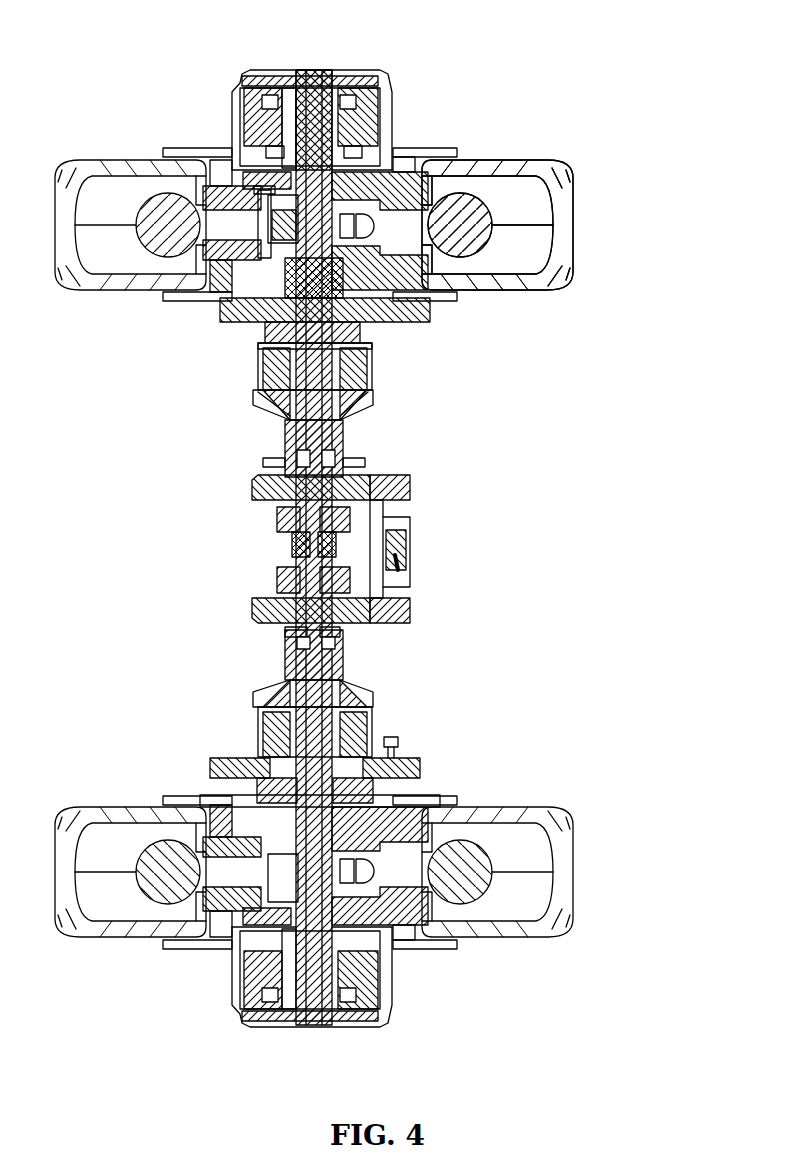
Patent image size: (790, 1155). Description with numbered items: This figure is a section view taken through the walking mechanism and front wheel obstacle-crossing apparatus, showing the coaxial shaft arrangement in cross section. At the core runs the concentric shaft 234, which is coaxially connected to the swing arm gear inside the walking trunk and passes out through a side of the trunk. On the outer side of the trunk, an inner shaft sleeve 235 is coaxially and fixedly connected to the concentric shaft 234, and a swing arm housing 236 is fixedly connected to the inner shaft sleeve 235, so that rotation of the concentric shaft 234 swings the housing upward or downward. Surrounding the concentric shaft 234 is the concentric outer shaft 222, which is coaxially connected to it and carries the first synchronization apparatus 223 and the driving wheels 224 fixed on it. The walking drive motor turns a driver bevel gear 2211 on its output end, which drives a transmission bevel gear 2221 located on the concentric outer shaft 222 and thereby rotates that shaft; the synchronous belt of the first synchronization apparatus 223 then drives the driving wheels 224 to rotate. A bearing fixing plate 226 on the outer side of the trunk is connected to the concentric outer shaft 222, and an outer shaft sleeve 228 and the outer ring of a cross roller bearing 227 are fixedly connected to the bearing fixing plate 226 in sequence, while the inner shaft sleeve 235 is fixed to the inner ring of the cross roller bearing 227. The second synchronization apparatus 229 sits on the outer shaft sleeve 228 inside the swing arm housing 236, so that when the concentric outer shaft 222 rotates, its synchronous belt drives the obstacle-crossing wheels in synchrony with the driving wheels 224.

The concentric shaft 234 is at (306, 165).
The inner shaft sleeve 235 is at (326, 100).
The swing arm housing 236 is at (373, 82).
The second synchronization apparatus 229 is at (362, 127).
The outer shaft sleeve 228 is at (263, 167).
The driving wheels 224 is at (572, 205).
The cross roller bearing 227 is at (262, 180).
The bearing fixing plate 226 is at (258, 200).
The first synchronization apparatus 223 is at (363, 332).
The transmission bevel gear 2221 is at (357, 363).
The driver bevel gear 2211 is at (360, 407).
The concentric outer shaft 222 is at (333, 434).